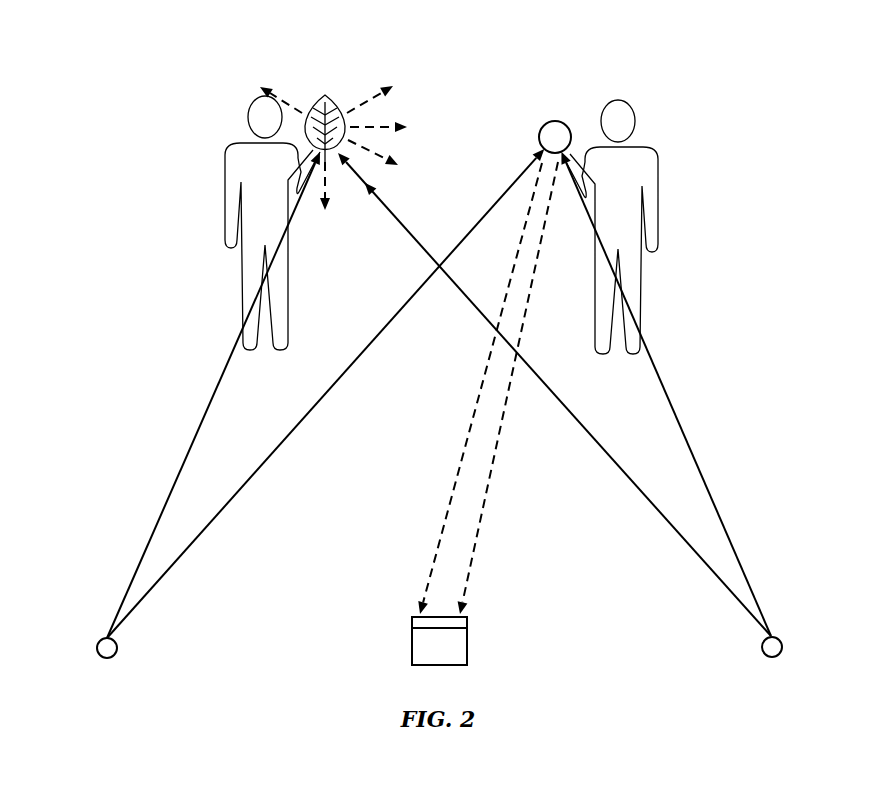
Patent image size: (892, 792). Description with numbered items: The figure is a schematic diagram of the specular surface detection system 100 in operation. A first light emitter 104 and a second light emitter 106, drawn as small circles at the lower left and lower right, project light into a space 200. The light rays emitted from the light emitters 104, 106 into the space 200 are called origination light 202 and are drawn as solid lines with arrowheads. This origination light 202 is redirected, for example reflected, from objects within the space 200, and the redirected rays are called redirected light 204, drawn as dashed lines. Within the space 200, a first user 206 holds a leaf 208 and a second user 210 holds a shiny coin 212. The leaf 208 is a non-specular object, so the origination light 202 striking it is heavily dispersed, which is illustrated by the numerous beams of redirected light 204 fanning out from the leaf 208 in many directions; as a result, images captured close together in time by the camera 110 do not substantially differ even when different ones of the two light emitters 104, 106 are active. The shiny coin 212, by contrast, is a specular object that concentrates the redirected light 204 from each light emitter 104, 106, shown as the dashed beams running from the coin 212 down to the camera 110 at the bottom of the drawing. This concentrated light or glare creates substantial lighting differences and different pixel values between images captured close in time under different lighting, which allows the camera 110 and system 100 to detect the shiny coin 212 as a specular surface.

The system 100 is at (394, 642).
The camera 110 is at (470, 618).
The first light emitter 104 is at (98, 641).
The second light emitter 106 is at (782, 641).
The space 200 is at (692, 70).
The origination light 202 is at (197, 428).
The redirected light 204 is at (382, 88).
The first user 206 is at (226, 183).
The leaf 208 is at (320, 92).
The second user 210 is at (658, 200).
The shiny coin 212 is at (552, 121).